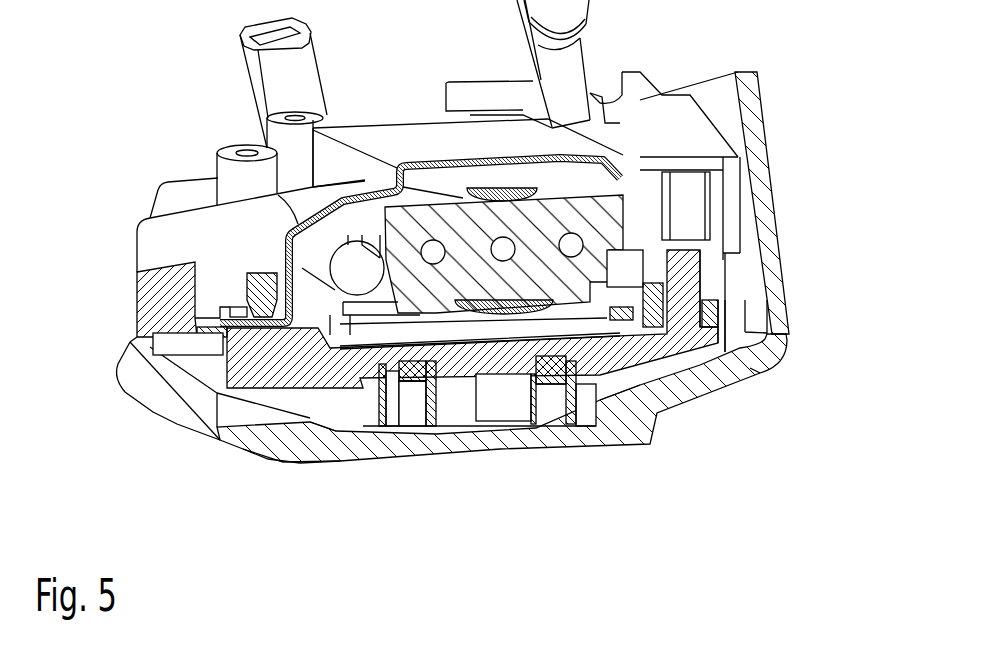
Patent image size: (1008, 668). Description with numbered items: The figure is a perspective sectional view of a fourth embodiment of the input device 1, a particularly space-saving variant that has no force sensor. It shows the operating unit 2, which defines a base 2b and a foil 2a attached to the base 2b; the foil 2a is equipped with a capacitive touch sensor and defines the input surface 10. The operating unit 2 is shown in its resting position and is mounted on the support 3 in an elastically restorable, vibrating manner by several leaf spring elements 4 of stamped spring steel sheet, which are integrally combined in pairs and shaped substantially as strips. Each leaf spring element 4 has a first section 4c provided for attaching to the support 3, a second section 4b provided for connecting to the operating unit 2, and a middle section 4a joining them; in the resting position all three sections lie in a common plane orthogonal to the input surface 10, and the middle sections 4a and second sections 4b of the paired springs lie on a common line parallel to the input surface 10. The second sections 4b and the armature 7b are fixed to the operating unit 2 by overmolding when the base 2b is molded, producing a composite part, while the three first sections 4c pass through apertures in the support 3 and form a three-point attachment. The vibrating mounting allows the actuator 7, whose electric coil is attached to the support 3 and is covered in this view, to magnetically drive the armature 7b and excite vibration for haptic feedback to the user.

The input device 1 is at (98, 228).
The operating unit 2 is at (180, 398).
The foil 2a is at (762, 378).
The base 2b is at (732, 335).
The support 3 is at (768, 94).
The leaf spring elements 4 is at (705, 358).
The middle section 4a is at (325, 400).
The second section 4b is at (569, 368).
The first section 4c is at (692, 296).
The actuator 7 is at (440, 183).
The armature 7b is at (600, 222).
The input surface 10 is at (268, 464).